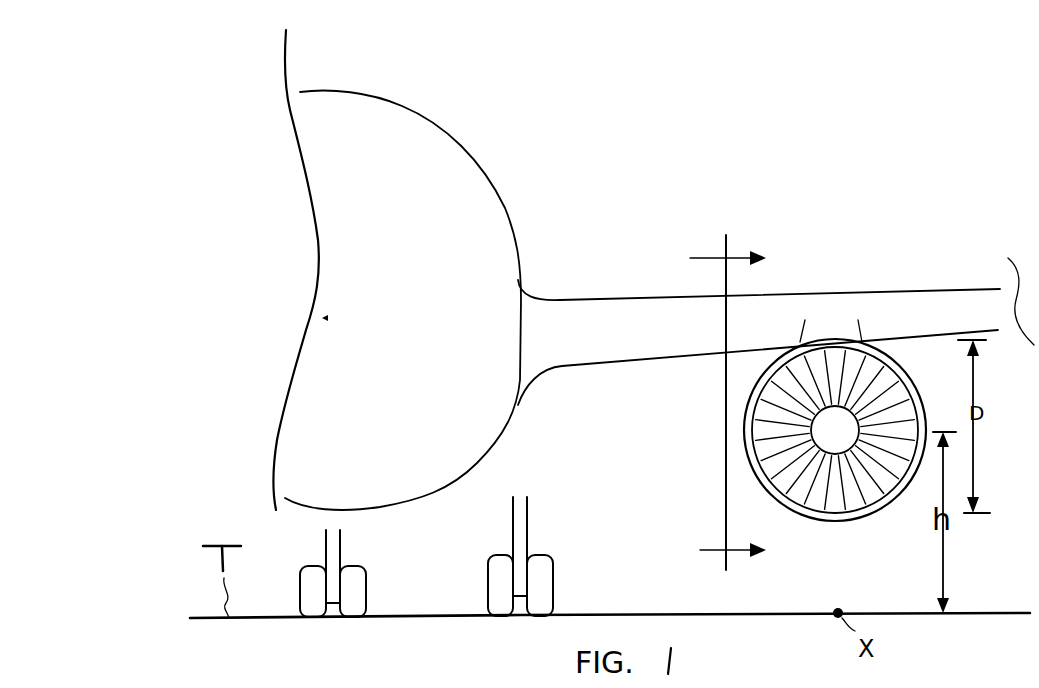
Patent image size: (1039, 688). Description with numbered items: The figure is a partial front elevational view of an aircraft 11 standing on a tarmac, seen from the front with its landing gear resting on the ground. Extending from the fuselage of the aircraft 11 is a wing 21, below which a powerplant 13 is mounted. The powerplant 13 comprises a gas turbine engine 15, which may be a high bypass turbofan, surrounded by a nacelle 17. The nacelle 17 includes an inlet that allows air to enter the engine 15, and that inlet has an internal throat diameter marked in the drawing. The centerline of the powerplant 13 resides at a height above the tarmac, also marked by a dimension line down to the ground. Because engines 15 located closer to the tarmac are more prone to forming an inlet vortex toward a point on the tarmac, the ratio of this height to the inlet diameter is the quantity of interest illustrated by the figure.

The aircraft 11 is at (430, 120).
The wing 21 is at (572, 316).
The gas turbine engine 15 is at (804, 398).
The nacelle 17 is at (764, 496).
The powerplant 13 is at (822, 484).